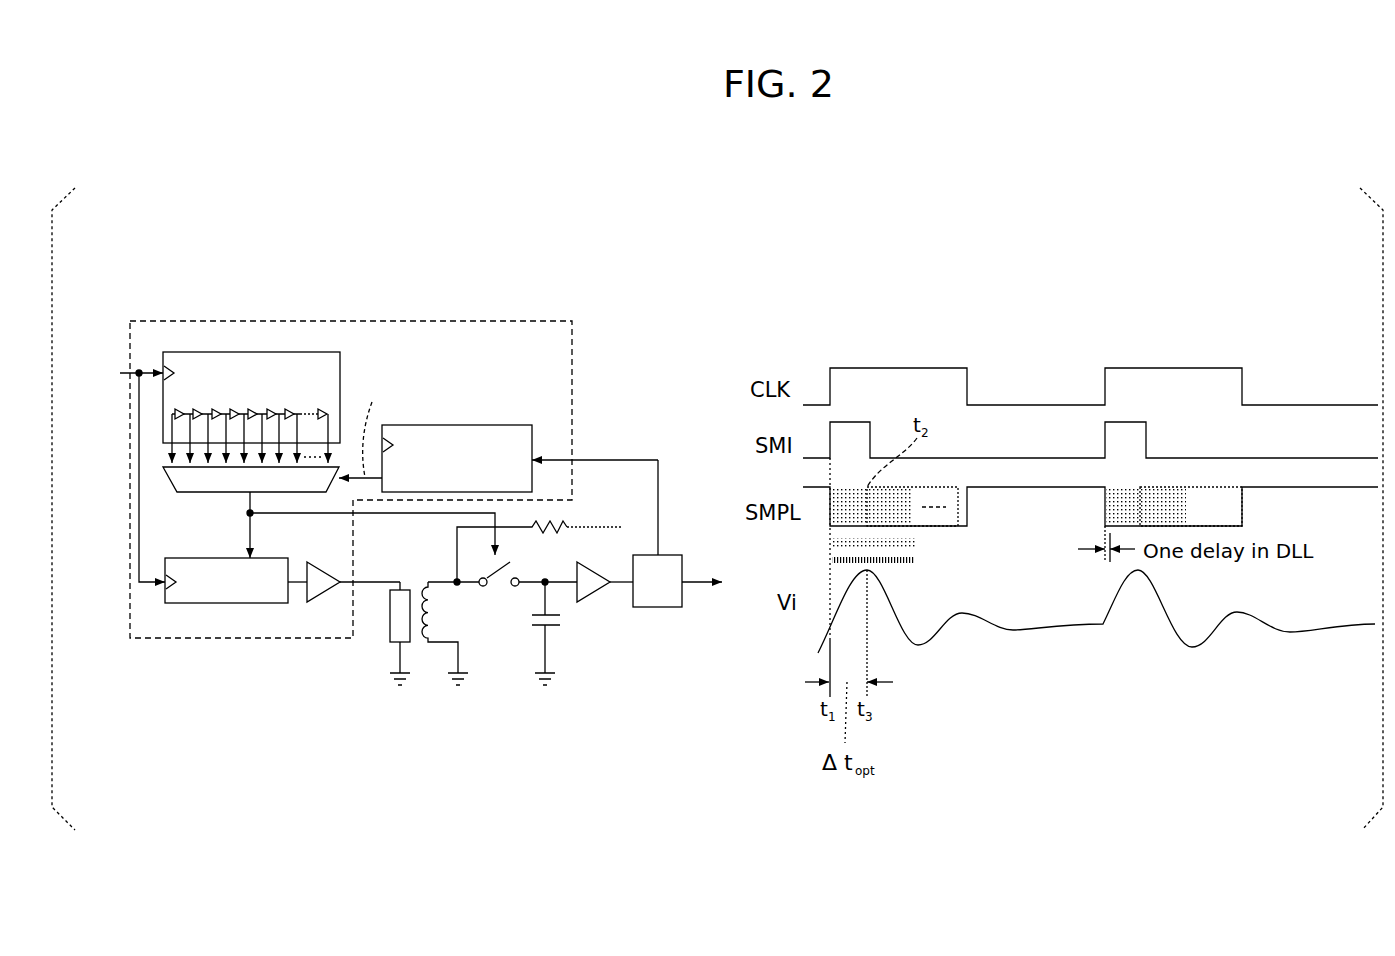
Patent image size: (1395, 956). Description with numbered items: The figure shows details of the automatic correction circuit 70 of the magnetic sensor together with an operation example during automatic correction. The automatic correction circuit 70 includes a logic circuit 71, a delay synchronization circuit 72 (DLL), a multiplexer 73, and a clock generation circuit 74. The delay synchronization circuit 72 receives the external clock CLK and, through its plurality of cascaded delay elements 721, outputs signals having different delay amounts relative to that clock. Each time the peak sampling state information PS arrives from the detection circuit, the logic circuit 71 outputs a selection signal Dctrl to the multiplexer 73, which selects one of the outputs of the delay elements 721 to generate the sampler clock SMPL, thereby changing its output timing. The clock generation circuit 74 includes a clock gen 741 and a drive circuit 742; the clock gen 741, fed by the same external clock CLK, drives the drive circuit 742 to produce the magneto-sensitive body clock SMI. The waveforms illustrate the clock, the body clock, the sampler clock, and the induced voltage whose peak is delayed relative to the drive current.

The automatic correction circuit 70 is at (545, 319).
The logic circuit 71 is at (502, 425).
The delay synchronization circuit 72 is at (199, 425).
The delay element 721 is at (178, 390).
The multiplexer 73 is at (172, 485).
The clock generation circuit 74 is at (252, 659).
The clock gen 741 is at (210, 603).
The drive circuit 742 is at (320, 602).